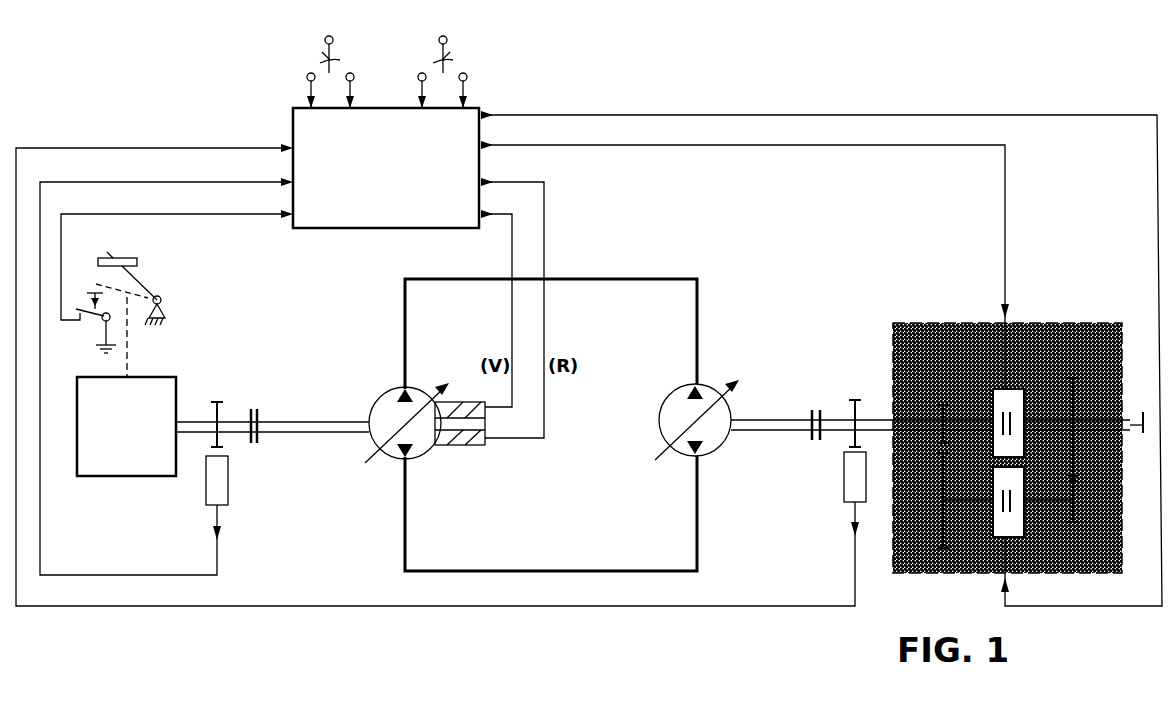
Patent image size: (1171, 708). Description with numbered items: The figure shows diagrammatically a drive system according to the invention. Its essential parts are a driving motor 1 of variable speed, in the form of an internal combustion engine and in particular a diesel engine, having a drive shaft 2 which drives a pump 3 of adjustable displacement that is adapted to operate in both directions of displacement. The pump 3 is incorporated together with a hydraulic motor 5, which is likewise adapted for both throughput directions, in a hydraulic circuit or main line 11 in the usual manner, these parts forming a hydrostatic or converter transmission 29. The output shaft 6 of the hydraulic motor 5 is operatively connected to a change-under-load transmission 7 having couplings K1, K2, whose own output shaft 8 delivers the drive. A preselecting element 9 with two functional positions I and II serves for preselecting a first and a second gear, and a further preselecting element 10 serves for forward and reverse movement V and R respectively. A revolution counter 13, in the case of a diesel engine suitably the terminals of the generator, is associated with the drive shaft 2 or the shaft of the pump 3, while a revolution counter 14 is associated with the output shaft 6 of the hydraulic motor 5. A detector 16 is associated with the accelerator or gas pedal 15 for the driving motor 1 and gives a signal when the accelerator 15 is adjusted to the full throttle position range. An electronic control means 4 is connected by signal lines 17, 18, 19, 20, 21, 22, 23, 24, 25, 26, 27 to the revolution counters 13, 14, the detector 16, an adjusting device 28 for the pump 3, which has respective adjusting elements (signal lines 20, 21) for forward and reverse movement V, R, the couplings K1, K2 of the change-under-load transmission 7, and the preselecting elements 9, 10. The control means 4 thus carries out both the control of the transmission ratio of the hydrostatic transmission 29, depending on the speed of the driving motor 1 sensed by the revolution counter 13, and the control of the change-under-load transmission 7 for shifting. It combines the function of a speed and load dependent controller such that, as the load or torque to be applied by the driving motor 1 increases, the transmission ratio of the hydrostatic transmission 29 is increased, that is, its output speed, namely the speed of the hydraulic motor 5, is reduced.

The driving motor 1 is at (105, 462).
The drive shaft 2 is at (193, 422).
The pump 3 is at (420, 443).
The electronic control means 4 is at (389, 188).
The hydraulic motor 5 is at (681, 445).
The output shaft 6 is at (778, 419).
The change-under-load transmission 7 is at (1083, 340).
The output shaft 8 is at (1135, 432).
The preselecting element 9 is at (324, 52).
The preselecting element 10 is at (447, 52).
The main line 11 is at (617, 573).
The revolution counter 13 is at (213, 485).
The revolution counter 14 is at (850, 476).
The accelerator 15 is at (143, 276).
The detector 16 is at (88, 326).
The signal line 17 is at (157, 147).
The signal line 18 is at (193, 181).
The signal line 19 is at (111, 213).
The signal line 20 is at (510, 250).
The signal line 21 is at (546, 232).
The signal line 22 is at (738, 148).
The signal line 23 is at (748, 113).
The signal line 24 is at (468, 86).
The signal line 25 is at (418, 84).
The signal line 26 is at (354, 78).
The signal line 27 is at (308, 88).
The adjusting device 28 is at (487, 460).
The hydrostatic transmission 29 is at (541, 580).
The coupling K1 is at (986, 524).
The coupling K2 is at (1027, 382).